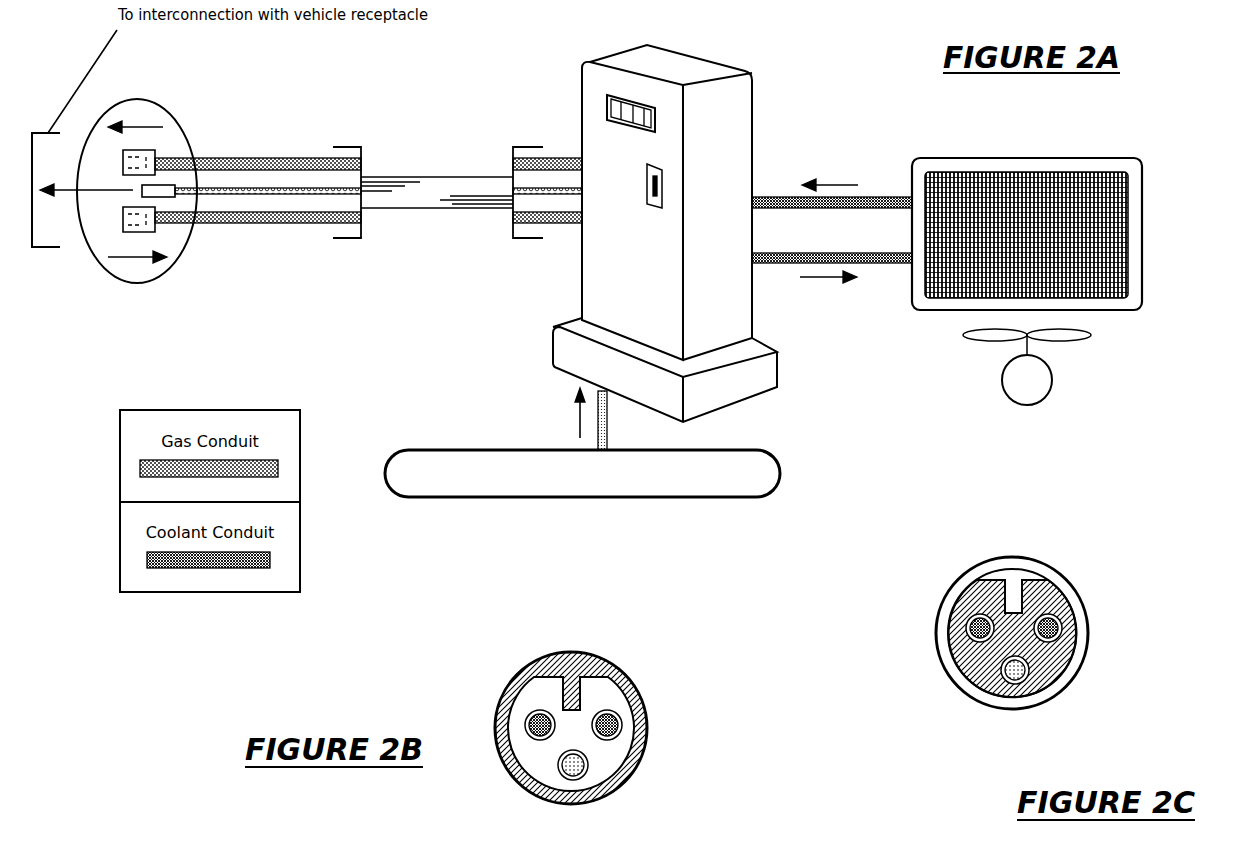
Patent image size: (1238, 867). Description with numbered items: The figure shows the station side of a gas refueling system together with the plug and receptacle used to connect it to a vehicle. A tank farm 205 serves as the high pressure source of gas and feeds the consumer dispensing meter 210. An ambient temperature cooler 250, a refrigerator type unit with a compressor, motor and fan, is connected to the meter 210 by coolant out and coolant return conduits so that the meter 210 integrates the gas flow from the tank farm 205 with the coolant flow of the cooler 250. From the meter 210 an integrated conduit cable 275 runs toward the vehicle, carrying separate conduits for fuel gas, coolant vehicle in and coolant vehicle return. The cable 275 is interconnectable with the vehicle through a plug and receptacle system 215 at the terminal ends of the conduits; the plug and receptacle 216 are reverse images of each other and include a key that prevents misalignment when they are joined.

In FIG. 2A, the tank farm 205 is at (508, 497).
In FIG. 2A, the consumer dispensing meter 210 is at (726, 136).
In FIG. 2B, the consumer dispensing meter 210 is at (573, 778).
In FIG. 2C, the consumer dispensing meter 210 is at (1018, 685).
In FIG. 2A, the plug and receptacle system 215 is at (148, 100).
In FIG. 2B, the plug and receptacle 216 is at (572, 692).
In FIG. 2C, the plug and receptacle 216 is at (1016, 590).
In FIG. 2A, the ambient temperature cooler 250 is at (300, 165).
In FIG. 2B, the ambient temperature cooler 250 is at (535, 715).
In FIG. 2C, the ambient temperature cooler 250 is at (970, 610).
In FIG. 2A, the integrated conduit cable 275 is at (405, 176).